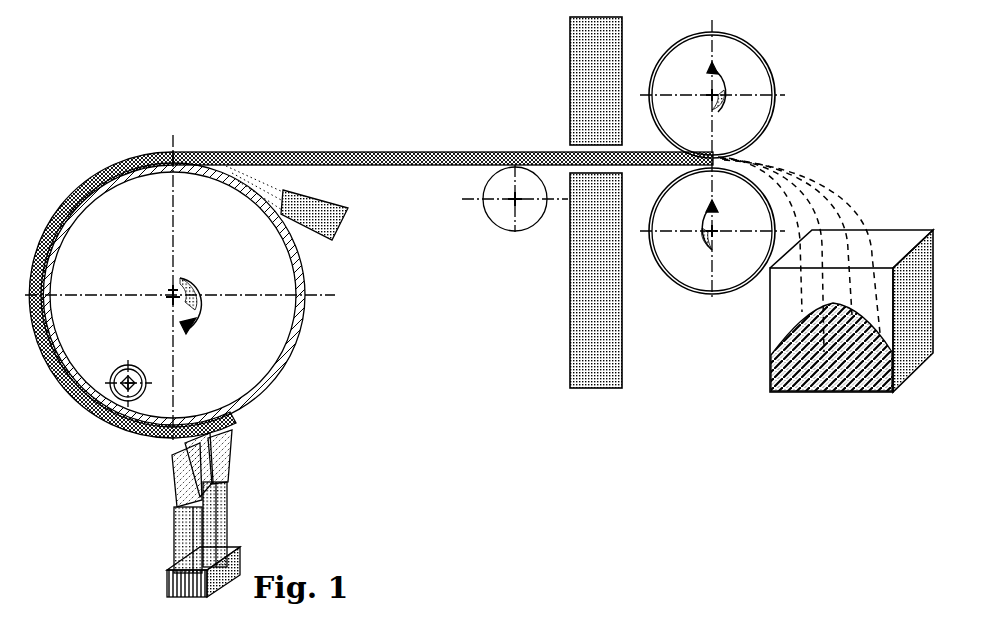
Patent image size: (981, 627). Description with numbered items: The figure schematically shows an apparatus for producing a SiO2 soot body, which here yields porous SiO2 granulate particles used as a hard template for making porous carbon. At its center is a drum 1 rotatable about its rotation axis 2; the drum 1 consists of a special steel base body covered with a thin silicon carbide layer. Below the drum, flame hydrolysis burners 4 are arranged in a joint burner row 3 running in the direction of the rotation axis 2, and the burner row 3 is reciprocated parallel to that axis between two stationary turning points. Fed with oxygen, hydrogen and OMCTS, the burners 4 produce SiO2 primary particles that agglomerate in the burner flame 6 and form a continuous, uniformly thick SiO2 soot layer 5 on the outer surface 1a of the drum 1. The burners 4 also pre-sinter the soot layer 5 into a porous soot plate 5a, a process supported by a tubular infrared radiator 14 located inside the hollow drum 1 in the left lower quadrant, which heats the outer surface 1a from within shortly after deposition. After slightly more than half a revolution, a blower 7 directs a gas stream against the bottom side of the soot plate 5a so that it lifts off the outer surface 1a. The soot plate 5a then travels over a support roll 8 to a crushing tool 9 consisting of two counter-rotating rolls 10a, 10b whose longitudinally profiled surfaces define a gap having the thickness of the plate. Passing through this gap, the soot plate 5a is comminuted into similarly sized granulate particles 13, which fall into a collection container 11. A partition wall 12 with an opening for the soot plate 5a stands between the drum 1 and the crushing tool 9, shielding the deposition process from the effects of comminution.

The drum 1 is at (305, 307).
The outer surface of the drum 1a is at (297, 353).
The rotation axis 2 is at (180, 303).
The burner row 3 is at (164, 580).
The flame hydrolysis burners 4 is at (183, 538).
The SiO2 soot layer 5 is at (162, 437).
The SiO2 porous soot plate 5a is at (422, 154).
The burner flame 6 is at (225, 460).
The blower 7 is at (323, 220).
The support roll 8 is at (497, 222).
The crushing tool 9 is at (689, 302).
The roll 10a is at (738, 92).
The roll 10b is at (717, 267).
The collection container 11 is at (893, 240).
The partition wall 12 is at (580, 285).
The granulate particles 13 is at (852, 184).
The tubular infrared radiator 14 is at (120, 395).